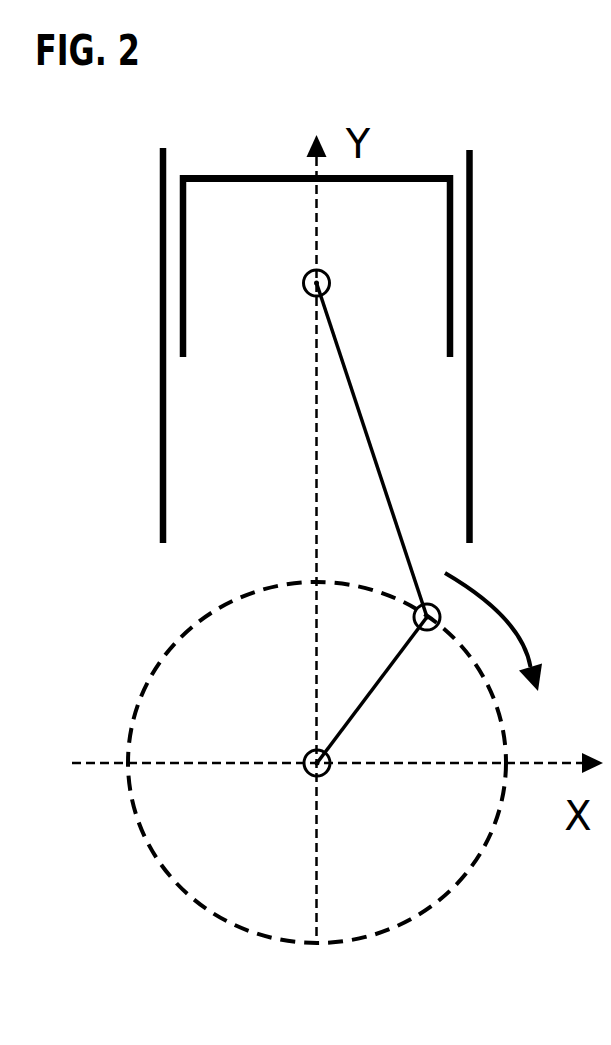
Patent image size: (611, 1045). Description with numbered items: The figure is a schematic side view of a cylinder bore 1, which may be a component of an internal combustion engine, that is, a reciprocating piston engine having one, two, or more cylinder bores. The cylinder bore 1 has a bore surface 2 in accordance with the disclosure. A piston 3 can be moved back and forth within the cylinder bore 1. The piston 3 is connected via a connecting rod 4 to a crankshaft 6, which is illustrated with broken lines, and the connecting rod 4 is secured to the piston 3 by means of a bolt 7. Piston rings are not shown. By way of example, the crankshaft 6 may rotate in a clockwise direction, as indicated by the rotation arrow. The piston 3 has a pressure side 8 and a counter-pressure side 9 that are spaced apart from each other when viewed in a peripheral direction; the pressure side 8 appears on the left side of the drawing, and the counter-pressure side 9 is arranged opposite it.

The cylinder bore 1 is at (259, 354).
The bore surface 2 is at (168, 506).
The piston 3 is at (312, 214).
The connecting rod 4 is at (372, 450).
The crankshaft 6 is at (335, 758).
The bolt 7 is at (309, 270).
The pressure side 8 is at (183, 212).
The counter-pressure side 9 is at (453, 223).